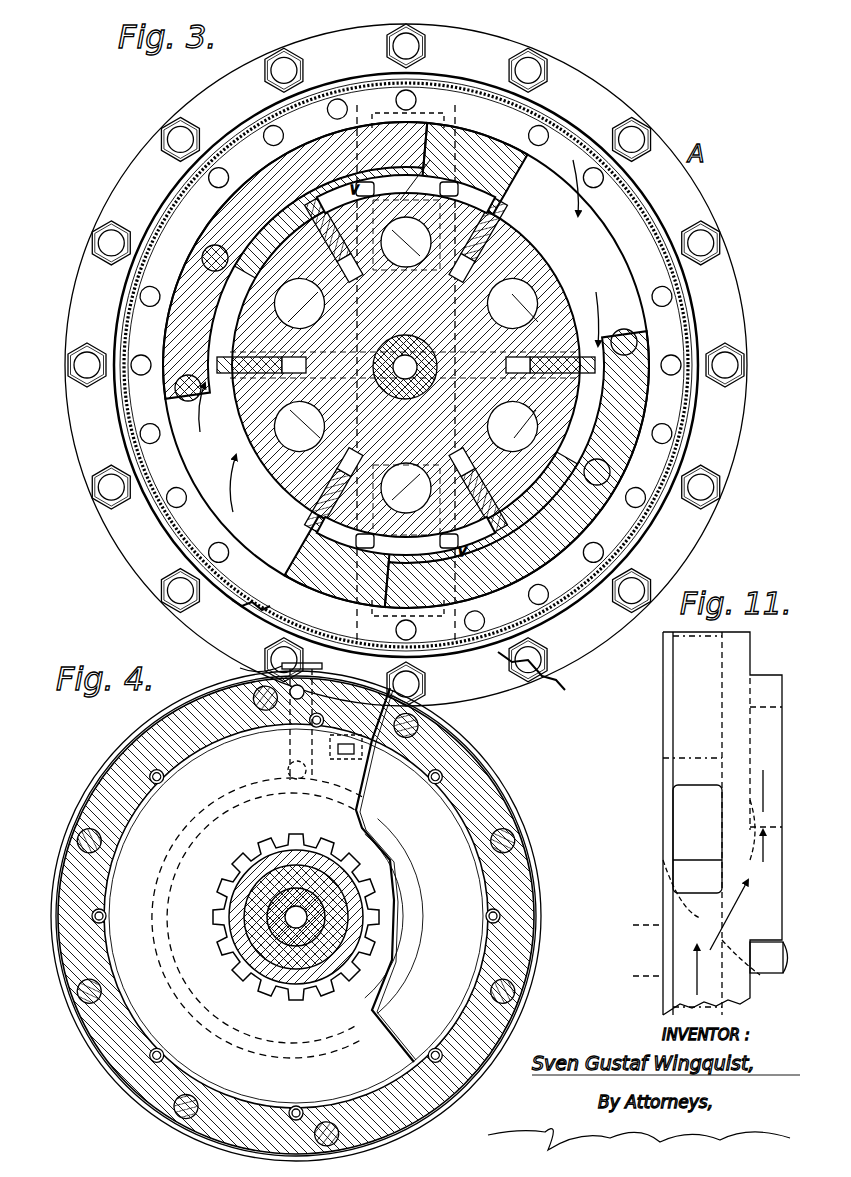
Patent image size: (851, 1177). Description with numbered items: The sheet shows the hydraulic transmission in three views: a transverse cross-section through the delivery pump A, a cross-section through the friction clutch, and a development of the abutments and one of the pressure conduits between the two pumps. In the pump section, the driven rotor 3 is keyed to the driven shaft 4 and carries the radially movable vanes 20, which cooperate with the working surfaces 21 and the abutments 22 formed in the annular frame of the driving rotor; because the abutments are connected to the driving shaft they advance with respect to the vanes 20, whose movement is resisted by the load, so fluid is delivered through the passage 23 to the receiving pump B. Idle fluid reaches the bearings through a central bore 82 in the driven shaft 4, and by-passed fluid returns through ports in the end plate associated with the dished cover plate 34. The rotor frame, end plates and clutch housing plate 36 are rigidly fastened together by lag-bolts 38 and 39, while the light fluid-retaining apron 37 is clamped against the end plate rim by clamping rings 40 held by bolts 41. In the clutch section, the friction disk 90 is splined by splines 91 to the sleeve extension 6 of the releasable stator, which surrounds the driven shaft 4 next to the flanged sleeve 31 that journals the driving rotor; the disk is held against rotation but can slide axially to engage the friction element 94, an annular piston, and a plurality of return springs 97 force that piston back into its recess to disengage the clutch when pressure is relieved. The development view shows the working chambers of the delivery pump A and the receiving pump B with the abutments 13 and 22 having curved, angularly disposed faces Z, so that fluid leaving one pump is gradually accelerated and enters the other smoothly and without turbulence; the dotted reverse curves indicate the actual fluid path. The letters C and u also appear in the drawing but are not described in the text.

In FIG. 3, the driven rotor 3 is at (405, 365).
In FIG. 3, the driven shaft 4 is at (410, 360).
In FIG. 4, the driven shaft 4 is at (300, 906).
In FIG. 4, the sleeve extension 6 is at (284, 976).
In FIG. 11, the abutments 13 is at (758, 972).
In FIG. 3, the vanes 20 is at (296, 216).
In FIG. 3, the working surfaces 21 is at (230, 291).
In FIG. 3, the abutments 22 is at (514, 218).
In FIG. 11, the abutments 22 is at (674, 890).
In FIG. 3, the passage 23 is at (431, 158).
In FIG. 11, the passage 23 is at (735, 887).
In FIG. 4, the flanged sleeve 31 is at (268, 948).
In FIG. 3, the dished cover plate 34 is at (352, 103).
In FIG. 4, the clutch housing plate 36 is at (116, 1074).
In FIG. 3, the fluid-retaining apron 37 is at (126, 303).
In FIG. 4, the lag-bolts 38 is at (506, 840).
In FIG. 3, the lag-bolts 39 is at (638, 340).
In FIG. 3, the clamping rings 40 is at (134, 192).
In FIG. 3, the bolts 41 is at (110, 478).
In FIG. 3, the central bore 82 is at (440, 327).
In FIG. 4, the friction disk 90 is at (265, 913).
In FIG. 4, the splines 91 is at (276, 843).
In FIG. 4, the friction element 94 is at (407, 875).
In FIG. 4, the return springs 97 is at (316, 726).
In FIG. 11, the delivery pump A is at (722, 823).
In FIG. 11, the receiving pump B is at (766, 770).
In FIG. 4, the bolt C is at (286, 665).
In FIG. 4, the stop u is at (248, 661).
In FIG. 11, the curved faces Z is at (716, 933).